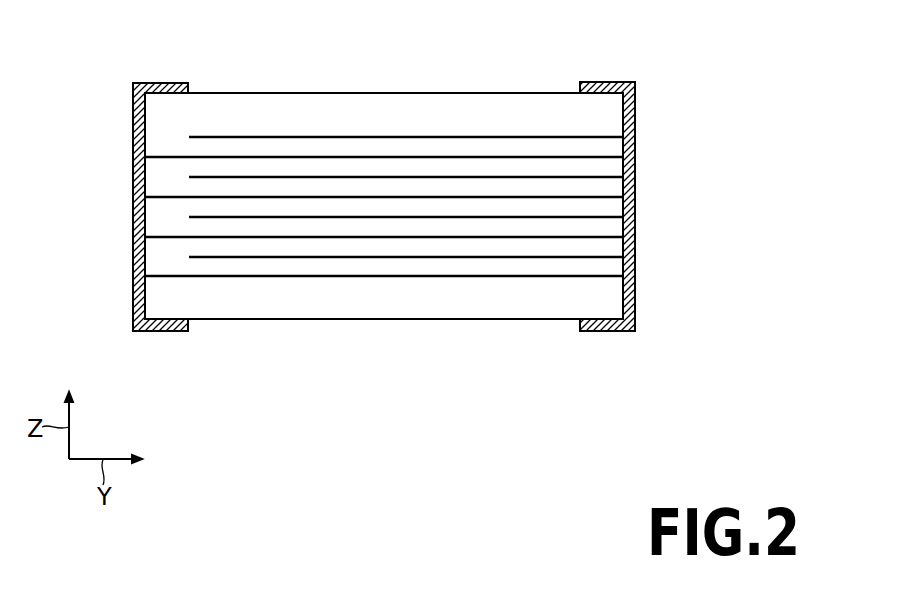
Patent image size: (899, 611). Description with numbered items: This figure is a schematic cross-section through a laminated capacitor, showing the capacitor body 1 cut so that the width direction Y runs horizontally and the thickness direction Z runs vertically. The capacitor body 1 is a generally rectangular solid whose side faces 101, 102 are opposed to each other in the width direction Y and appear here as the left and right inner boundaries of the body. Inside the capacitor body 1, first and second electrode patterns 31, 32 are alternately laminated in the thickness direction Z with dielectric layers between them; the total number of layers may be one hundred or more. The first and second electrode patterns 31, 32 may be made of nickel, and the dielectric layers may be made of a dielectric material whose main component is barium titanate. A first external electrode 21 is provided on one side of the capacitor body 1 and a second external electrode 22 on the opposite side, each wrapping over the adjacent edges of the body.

The capacitor body 1 is at (386, 105).
The first external electrode 21 is at (157, 83).
The second external electrode 22 is at (603, 82).
The first electrode pattern 31 is at (167, 157).
The second electrode pattern 32 is at (576, 137).
The side face 101 is at (145, 292).
The side face 102 is at (620, 291).